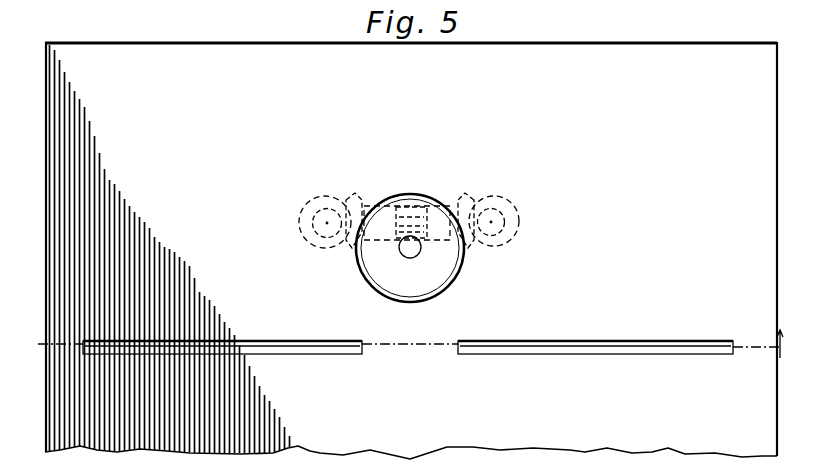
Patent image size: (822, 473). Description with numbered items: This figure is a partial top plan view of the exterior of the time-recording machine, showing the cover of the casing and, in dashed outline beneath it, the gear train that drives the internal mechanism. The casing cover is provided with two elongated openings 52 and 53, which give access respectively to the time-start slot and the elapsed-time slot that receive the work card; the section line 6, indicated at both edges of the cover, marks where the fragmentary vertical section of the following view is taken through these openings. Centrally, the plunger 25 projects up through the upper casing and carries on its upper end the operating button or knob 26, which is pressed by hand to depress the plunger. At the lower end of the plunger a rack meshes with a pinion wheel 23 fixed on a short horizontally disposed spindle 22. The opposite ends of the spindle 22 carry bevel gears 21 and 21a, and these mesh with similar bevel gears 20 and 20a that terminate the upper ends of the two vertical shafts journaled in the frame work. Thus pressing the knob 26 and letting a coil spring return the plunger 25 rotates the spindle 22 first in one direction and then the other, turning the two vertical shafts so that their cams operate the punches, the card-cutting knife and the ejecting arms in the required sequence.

The section line 6— 6 is at (410, 344).
The bevel gear 20 is at (326, 222).
The bevel gear 20a is at (518, 232).
The bevel gear 21 is at (342, 255).
The bevel gear 21a is at (476, 253).
The spindle 22 is at (388, 237).
The pinion wheel 23 is at (422, 246).
The plunger 25 is at (422, 237).
The operating button or knob 26 is at (431, 205).
The opening 52 is at (277, 338).
The opening 53 is at (589, 341).